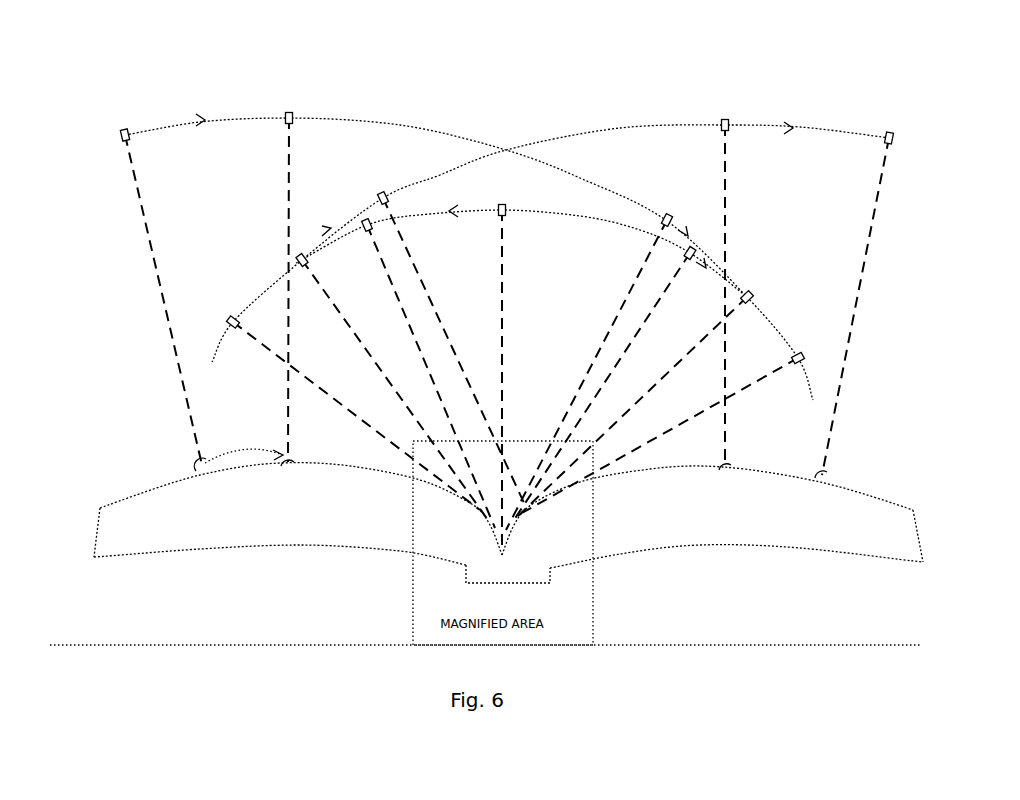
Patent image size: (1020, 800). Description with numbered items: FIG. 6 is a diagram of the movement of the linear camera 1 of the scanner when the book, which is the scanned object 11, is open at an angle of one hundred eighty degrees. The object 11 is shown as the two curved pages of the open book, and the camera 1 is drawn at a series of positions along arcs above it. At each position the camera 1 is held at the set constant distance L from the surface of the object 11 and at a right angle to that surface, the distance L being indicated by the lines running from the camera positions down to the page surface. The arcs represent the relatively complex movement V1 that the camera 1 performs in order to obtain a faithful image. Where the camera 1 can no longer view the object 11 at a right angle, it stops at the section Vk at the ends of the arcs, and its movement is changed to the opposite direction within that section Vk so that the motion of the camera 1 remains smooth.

The linear camera 1 is at (125, 133).
The object 11 is at (822, 520).
The camera movement V1 is at (507, 227).
The VK section Vk is at (516, 361).
The constant distance L is at (507, 331).